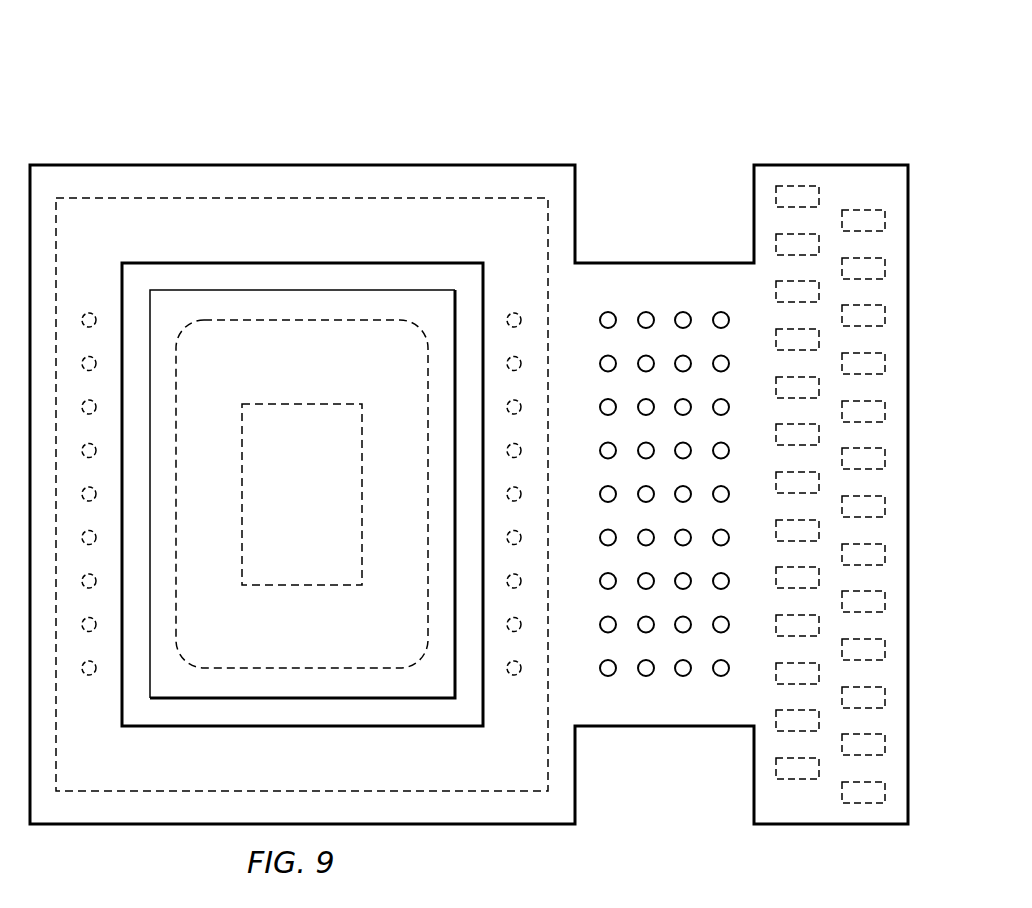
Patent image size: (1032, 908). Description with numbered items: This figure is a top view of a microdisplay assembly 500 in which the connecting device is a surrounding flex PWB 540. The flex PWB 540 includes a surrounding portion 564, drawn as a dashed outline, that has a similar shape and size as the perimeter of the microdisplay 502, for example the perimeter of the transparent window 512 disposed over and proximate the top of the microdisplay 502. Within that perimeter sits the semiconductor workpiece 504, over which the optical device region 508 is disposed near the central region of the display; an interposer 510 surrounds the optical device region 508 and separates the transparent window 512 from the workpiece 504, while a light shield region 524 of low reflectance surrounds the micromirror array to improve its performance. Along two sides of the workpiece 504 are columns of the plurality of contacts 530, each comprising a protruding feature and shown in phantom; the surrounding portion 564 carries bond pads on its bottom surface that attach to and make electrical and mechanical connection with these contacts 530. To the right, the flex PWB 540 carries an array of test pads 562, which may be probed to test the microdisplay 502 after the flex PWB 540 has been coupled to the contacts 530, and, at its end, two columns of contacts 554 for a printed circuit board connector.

The microdisplay assembly 500 is at (469, 443).
The microdisplay 502 is at (241, 145).
The semiconductor workpiece 504 is at (302, 717).
The optical device region 508 is at (302, 415).
The interposer 510 is at (302, 459).
The transparent window 512 is at (273, 302).
The light shield region 524 is at (233, 668).
The plurality of contacts 530 is at (89, 316).
The flex PWB 540 is at (839, 478).
The contacts 554 is at (796, 193).
The test pads 562 is at (645, 320).
The surrounding portion 564 is at (160, 175).